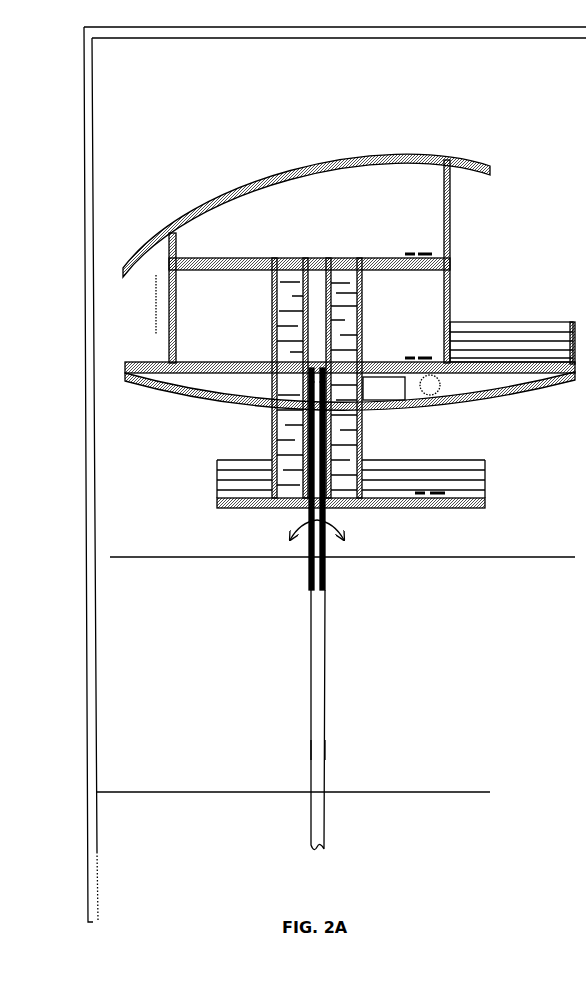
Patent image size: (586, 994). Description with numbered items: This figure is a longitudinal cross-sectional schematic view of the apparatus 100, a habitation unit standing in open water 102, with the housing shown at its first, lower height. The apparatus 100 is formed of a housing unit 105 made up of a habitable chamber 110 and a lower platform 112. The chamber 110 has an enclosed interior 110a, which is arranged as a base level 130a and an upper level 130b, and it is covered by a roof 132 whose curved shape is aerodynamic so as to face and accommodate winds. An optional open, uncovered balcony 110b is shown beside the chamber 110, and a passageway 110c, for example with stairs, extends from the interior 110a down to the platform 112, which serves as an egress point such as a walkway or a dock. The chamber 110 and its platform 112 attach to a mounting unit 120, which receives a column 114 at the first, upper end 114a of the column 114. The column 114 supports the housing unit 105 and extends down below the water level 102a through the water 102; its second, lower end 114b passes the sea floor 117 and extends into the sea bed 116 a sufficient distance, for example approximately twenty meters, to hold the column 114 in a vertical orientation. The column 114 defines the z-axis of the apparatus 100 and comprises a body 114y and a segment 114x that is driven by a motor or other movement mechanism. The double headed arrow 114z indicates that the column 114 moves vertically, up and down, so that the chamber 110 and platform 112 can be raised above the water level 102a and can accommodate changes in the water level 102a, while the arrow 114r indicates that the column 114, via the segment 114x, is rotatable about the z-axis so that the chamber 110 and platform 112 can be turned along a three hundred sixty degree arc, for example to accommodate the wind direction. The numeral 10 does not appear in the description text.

The apparatus 100 is at (165, 135).
The system 10 is at (579, 72).
The housing unit 105 is at (444, 147).
The roof 132 is at (303, 165).
The habitable chamber 110 is at (453, 222).
The interior 110a is at (318, 221).
The balcony 110b is at (510, 293).
The passageway 110c is at (363, 455).
The platform 112 is at (557, 322).
The base level 130a is at (389, 362).
The upper level 130b is at (389, 258).
The column 114 is at (333, 717).
The first end of the column 114a is at (323, 407).
The second end of the column 114b is at (316, 738).
The segment 114x is at (312, 376).
The body of the column 114y is at (326, 641).
The double headed arrow 114z is at (189, 466).
The arrow 114r is at (330, 518).
The mounting unit 120 is at (364, 440).
The open water 102 is at (488, 622).
The water level 102a is at (514, 554).
The sea bed 116 is at (410, 832).
The sea floor 117 is at (455, 797).